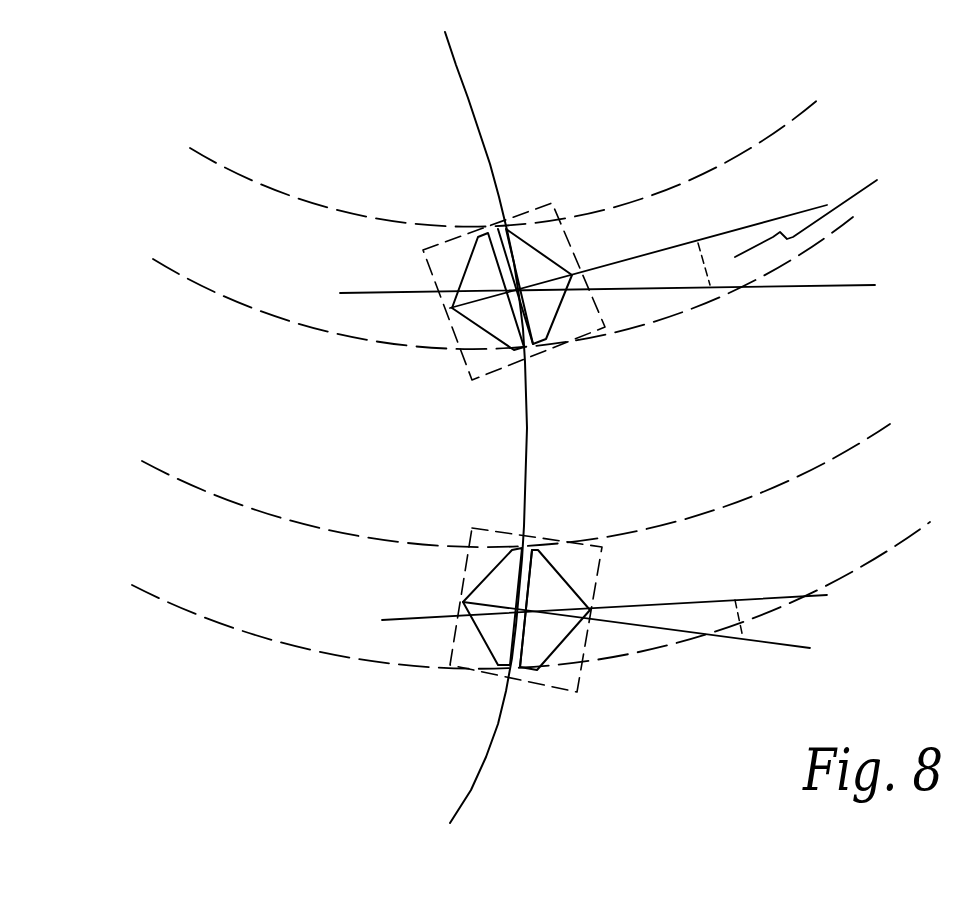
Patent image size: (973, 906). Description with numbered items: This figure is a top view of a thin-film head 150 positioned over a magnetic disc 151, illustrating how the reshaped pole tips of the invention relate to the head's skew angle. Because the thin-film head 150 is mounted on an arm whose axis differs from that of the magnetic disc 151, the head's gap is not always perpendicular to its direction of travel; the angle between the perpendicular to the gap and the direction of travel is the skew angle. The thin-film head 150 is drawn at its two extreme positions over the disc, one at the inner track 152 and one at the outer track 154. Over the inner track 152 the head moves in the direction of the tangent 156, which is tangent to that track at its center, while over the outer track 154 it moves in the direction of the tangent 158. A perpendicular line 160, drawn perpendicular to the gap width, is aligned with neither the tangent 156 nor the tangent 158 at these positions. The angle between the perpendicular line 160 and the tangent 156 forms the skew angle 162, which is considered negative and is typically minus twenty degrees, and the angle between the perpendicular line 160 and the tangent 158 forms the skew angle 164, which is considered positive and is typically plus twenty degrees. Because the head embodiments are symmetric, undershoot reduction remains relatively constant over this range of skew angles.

The thin-film head 150 is at (480, 378).
The magnetic disc 151 is at (232, 635).
The inner track 152 is at (702, 307).
The outer track 154 is at (708, 513).
The tangent 156 is at (842, 283).
The tangent 158 is at (758, 597).
The perpendicular line 160 is at (755, 222).
The skew angle 162 is at (837, 210).
The skew angle 164 is at (770, 624).